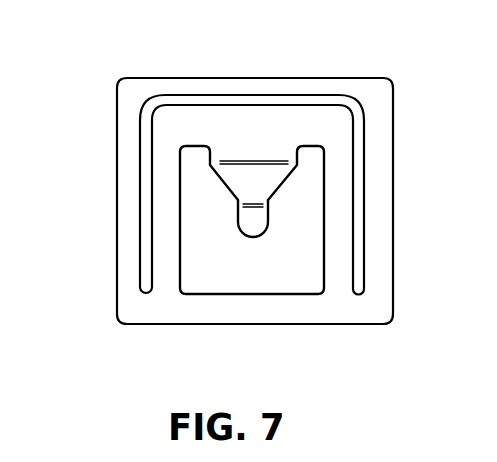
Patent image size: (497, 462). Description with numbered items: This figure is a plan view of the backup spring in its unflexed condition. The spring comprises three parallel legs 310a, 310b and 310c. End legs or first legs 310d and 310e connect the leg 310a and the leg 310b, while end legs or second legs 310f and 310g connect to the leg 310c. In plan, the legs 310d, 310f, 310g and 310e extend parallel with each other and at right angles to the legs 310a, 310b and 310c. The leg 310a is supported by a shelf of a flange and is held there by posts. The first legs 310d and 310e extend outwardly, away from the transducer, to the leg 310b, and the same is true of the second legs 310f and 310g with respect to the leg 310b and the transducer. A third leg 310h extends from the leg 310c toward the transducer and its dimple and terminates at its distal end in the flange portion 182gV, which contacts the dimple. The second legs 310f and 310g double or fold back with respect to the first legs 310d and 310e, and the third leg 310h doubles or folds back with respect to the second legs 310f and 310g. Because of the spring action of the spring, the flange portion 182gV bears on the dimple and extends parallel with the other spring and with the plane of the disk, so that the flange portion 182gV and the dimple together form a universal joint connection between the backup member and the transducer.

The leg 310a is at (151, 86).
The leg 310b is at (299, 346).
The leg 310c is at (323, 120).
The first leg 310d is at (417, 149).
The first leg 310e is at (122, 152).
The second leg 310f is at (417, 253).
The second leg 310g is at (157, 257).
The third leg 310h is at (250, 172).
The flange portion 182gV is at (218, 347).